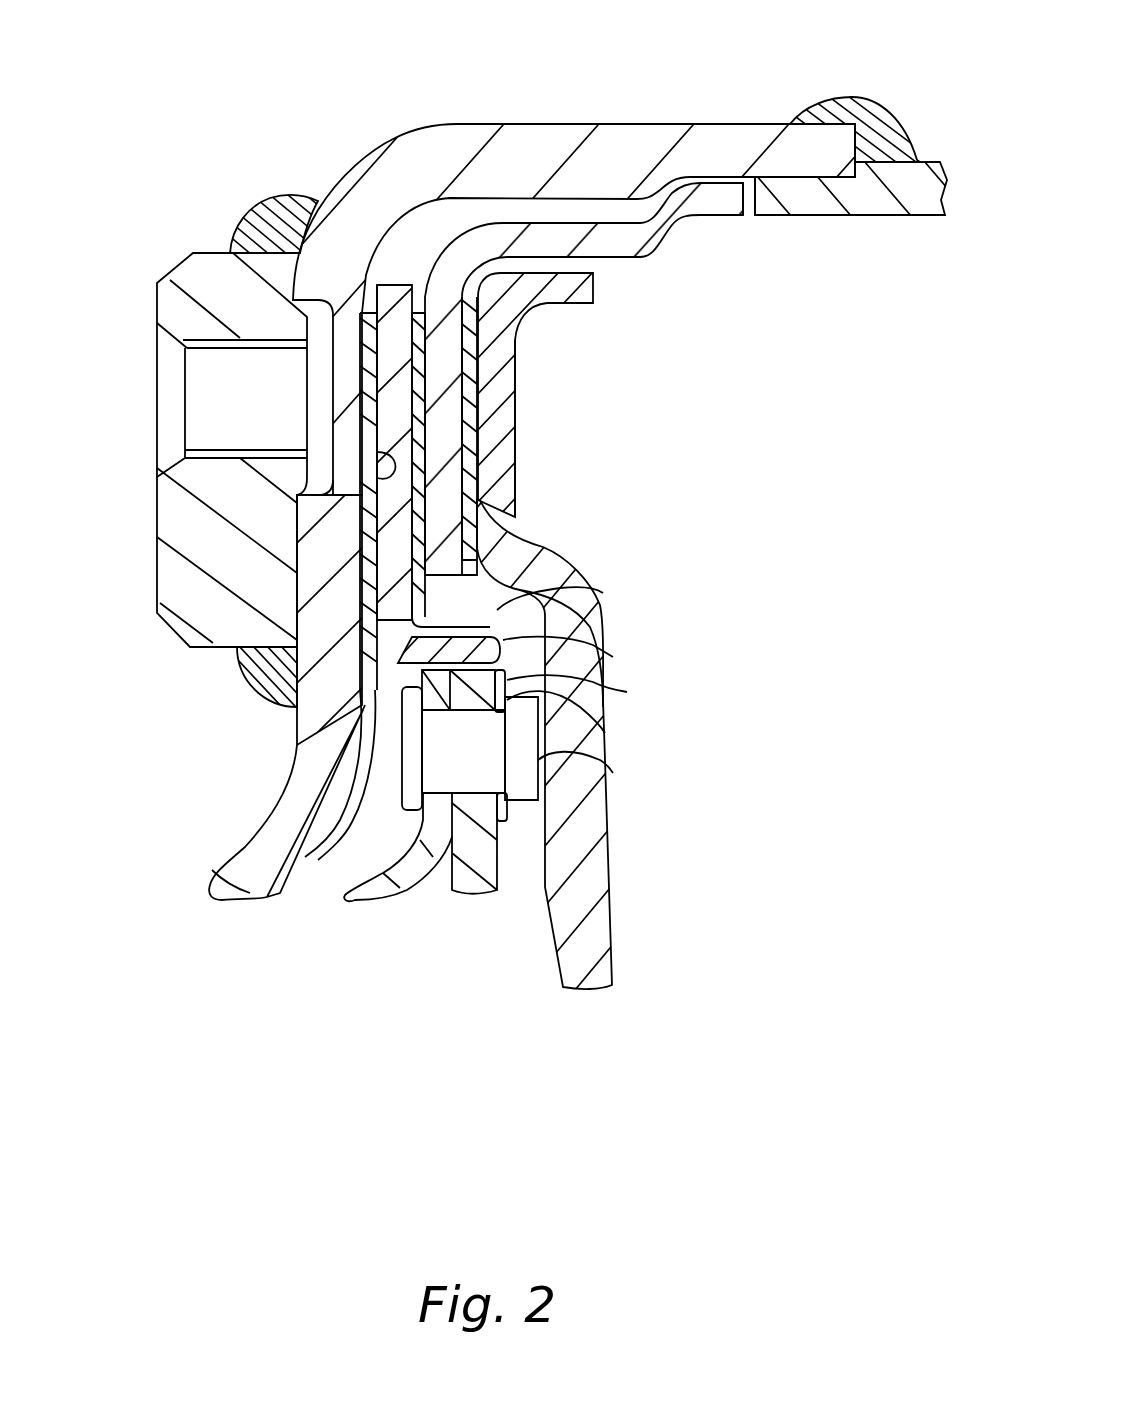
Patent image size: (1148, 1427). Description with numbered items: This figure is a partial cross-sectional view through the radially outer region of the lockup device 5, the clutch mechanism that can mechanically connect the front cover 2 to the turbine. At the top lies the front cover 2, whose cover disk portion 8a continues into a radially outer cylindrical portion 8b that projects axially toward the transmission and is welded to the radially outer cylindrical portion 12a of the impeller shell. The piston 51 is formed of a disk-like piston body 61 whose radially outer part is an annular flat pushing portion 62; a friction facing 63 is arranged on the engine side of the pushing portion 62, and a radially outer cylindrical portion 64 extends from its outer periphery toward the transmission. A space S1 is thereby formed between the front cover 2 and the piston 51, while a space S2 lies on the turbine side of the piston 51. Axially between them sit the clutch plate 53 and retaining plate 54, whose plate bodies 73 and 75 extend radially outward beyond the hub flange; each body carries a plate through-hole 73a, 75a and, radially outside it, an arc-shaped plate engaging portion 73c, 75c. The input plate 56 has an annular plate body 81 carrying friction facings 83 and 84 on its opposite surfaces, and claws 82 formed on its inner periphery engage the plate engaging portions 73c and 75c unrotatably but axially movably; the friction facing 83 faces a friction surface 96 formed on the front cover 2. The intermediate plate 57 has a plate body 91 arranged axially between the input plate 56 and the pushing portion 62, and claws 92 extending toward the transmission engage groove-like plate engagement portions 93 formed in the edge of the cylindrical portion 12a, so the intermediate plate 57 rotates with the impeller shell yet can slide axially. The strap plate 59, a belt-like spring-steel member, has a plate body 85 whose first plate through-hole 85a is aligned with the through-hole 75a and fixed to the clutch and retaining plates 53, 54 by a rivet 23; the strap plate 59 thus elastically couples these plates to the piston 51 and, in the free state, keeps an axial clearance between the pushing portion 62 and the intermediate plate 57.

The front cover 2 is at (854, 157).
The lockup device 5 is at (574, 287).
The cover disk portion 8a is at (227, 883).
The radially outer cylindrical portion 8b is at (550, 140).
The radially outer cylindrical portion of the impeller shell 12a is at (890, 203).
The rivet 23 is at (515, 757).
The piston 51 is at (584, 631).
The clutch plate 53 is at (372, 853).
The retaining plate 54 is at (519, 869).
The input plate 56 is at (357, 612).
The intermediate plate 57 is at (462, 487).
The strap plate 59 is at (519, 824).
The piston body 61 is at (603, 960).
The pushing portion 62 is at (515, 427).
The friction facing 63 is at (478, 400).
The radially outer cylindrical portion 64 is at (590, 289).
The plate body 73 is at (348, 905).
The plate through-hole 73a is at (422, 773).
The plate engaging portion 73c is at (520, 578).
The plate body 75 is at (492, 893).
The plate through-hole 75a is at (478, 793).
The plate engaging portion 75c is at (603, 580).
The plate body 81 is at (383, 550).
The claw 82 is at (613, 657).
The friction facing 83 is at (375, 397).
The friction facing 84 is at (420, 377).
The plate body 85 is at (627, 692).
The first plate through-hole 85a is at (605, 733).
The plate body 91 is at (447, 580).
The claw 92 is at (722, 197).
The plate engagement portion 93 is at (715, 178).
The friction surface 96 is at (362, 478).
The space S1 is at (317, 874).
The space S2 is at (755, 608).